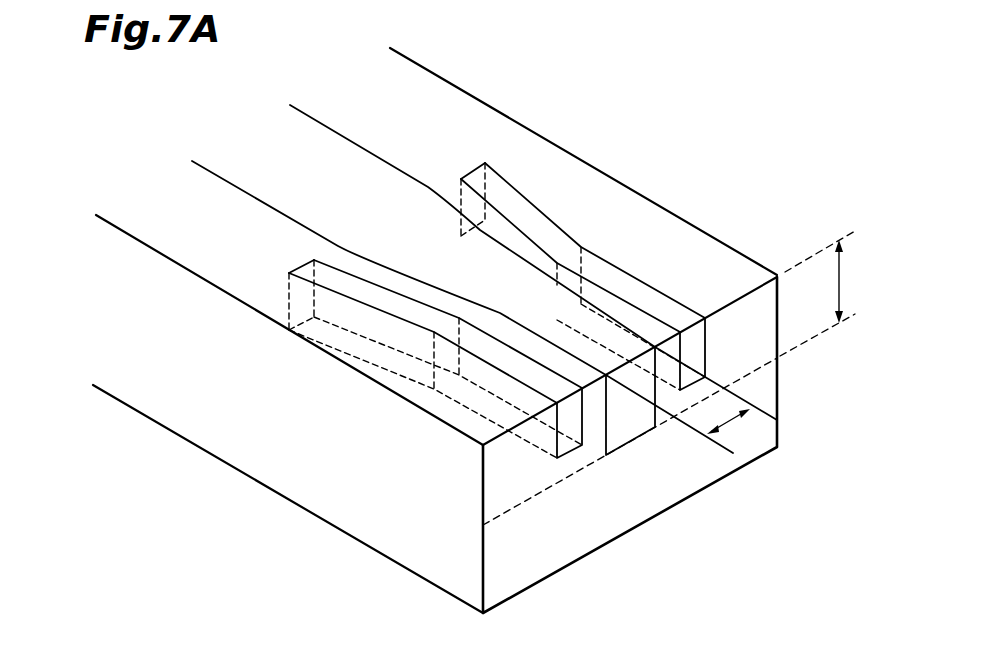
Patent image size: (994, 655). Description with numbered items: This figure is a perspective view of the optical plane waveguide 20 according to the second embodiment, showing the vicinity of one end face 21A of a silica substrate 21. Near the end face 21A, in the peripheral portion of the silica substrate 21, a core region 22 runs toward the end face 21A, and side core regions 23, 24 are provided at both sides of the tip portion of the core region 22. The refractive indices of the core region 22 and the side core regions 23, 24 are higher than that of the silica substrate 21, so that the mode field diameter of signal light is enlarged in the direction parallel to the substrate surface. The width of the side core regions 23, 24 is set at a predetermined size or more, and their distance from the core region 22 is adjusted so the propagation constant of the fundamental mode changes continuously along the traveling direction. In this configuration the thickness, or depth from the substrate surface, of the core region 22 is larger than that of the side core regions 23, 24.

The optical plane waveguide 20 is at (648, 93).
The silica substrate 21 is at (714, 237).
The end face 21A is at (768, 377).
The core region 22 is at (252, 192).
The side core region 23 is at (419, 306).
The side core region 24 is at (575, 250).